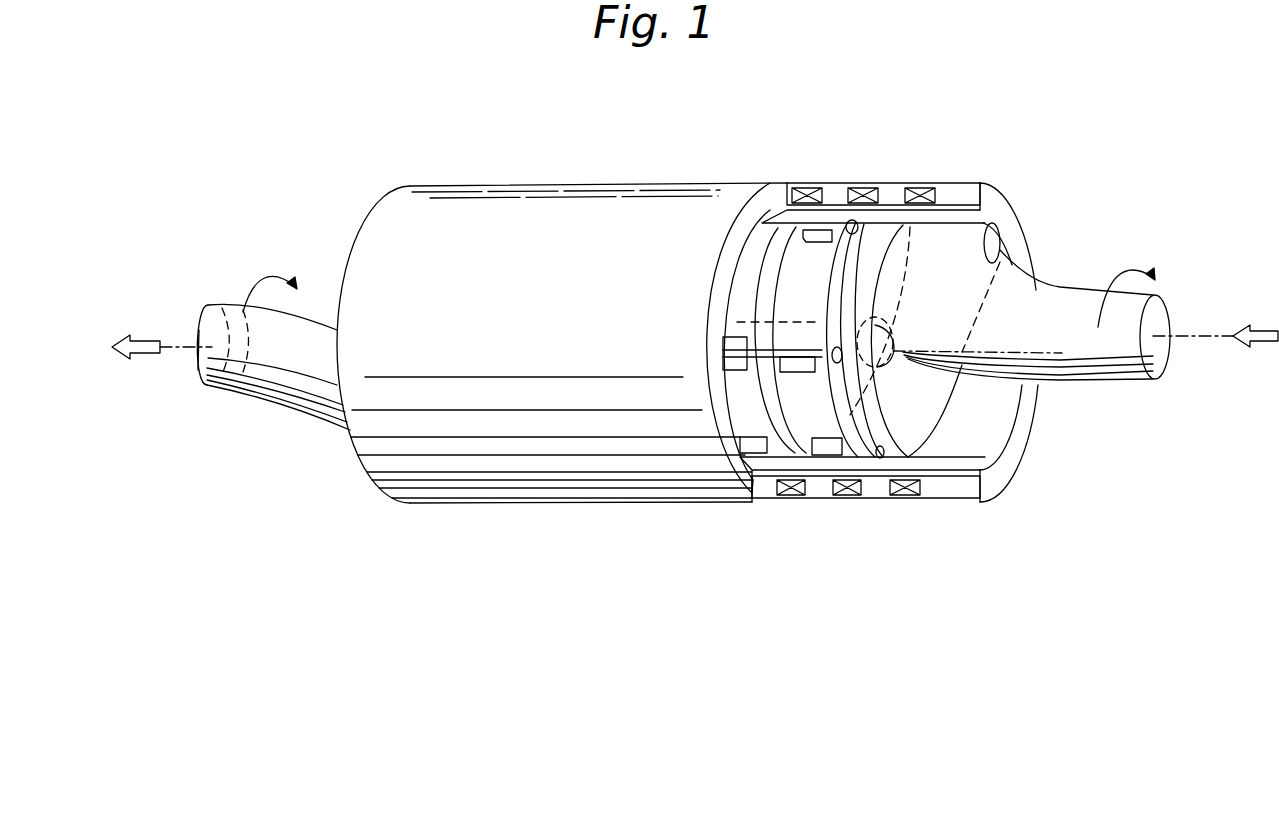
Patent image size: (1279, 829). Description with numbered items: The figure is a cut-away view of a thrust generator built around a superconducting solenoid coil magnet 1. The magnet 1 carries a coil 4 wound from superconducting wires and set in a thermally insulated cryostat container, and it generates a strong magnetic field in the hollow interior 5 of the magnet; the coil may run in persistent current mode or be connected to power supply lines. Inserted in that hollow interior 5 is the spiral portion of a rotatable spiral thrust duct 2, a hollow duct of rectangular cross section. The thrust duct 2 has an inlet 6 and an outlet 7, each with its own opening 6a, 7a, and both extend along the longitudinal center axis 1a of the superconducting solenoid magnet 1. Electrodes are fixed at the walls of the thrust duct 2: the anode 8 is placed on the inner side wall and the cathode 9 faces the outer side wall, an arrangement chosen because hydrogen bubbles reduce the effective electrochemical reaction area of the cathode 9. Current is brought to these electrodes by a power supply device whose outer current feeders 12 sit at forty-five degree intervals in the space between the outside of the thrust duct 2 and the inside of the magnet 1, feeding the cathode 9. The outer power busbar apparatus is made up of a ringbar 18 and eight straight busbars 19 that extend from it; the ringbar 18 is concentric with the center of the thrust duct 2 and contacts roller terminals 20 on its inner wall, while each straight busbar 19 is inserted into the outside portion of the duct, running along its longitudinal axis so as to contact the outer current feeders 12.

The superconducting solenoid coil magnet 1 is at (955, 182).
The longitudinal center axis 1a is at (1215, 333).
The rotatable spiral thrust duct 2 is at (1053, 284).
The coil 4 is at (940, 497).
The hollow interior 5 is at (980, 441).
The inlet 6 is at (1072, 378).
The opening 6a is at (1162, 362).
The outlet 7 is at (270, 382).
The opening 7a is at (197, 367).
The anode 8 is at (870, 320).
The cathode 9 is at (788, 277).
The outer current feeders 12 is at (822, 228).
The ringbar 18 is at (822, 392).
The straight busbars 19 is at (730, 357).
The roller terminals 20 is at (862, 410).